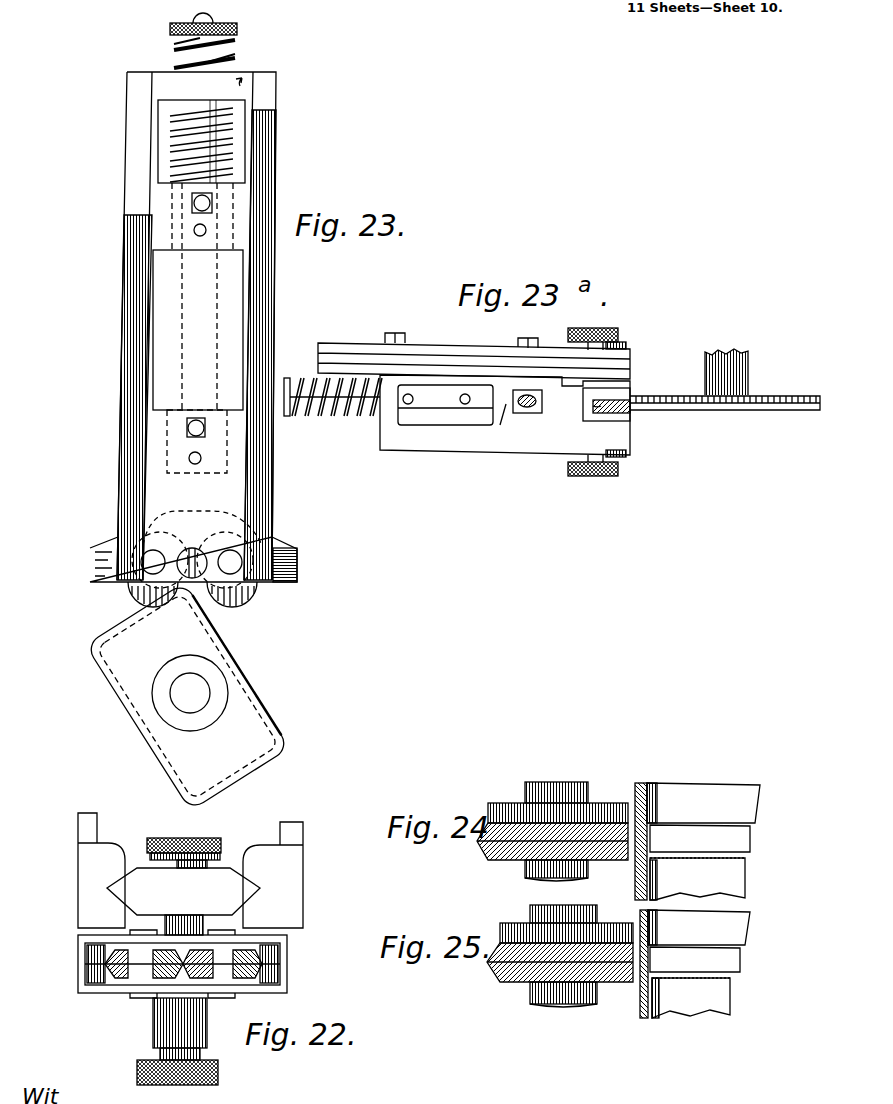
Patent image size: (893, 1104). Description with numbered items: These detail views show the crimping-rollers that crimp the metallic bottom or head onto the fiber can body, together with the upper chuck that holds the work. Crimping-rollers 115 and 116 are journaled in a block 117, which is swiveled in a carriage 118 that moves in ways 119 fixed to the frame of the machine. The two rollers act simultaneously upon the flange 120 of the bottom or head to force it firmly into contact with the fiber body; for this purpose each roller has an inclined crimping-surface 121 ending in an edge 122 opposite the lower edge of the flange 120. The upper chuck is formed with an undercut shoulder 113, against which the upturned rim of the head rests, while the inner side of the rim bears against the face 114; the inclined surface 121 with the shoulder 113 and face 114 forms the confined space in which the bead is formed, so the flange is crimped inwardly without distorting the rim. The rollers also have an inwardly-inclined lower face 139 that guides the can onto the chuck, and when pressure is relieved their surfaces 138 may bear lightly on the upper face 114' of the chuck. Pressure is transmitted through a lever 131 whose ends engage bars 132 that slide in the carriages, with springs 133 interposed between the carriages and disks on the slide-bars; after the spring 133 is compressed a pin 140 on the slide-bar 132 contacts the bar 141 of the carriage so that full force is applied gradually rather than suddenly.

In FIG. 24, the undercut shoulder 113 is at (703, 803).
In FIG. 25, the undercut shoulder 113 is at (645, 955).
In FIG. 24, the face 114 is at (700, 862).
In FIG. 25, the face 114 is at (695, 982).
In FIG. 23A, the upper face 114' is at (725, 379).
In FIG. 24, the upper face 114' is at (631, 774).
In FIG. 25, the upper face 114' is at (776, 925).
In FIG. 23, the crimping-roller 115 is at (246, 600).
In FIG. 22, the crimping-roller 115 is at (227, 963).
In FIG. 23, the crimping-roller 116 is at (128, 590).
In FIG. 23A, the crimping-roller 116 is at (632, 411).
In FIG. 22, the crimping-roller 116 is at (122, 960).
In FIG. 23, the block 117 is at (286, 558).
In FIG. 23, the carriage 118 is at (228, 487).
In FIG. 23A, the carriage 118 is at (362, 353).
In FIG. 22, the carriage 118 is at (183, 886).
In FIG. 22, the ways 119 is at (82, 882).
In FIG. 24, the flange 120 is at (637, 855).
In FIG. 25, the flange 120 is at (640, 987).
In FIG. 23A, the inclined crimping-surface 121 is at (593, 417).
In FIG. 22, the inclined crimping-surface 121 is at (120, 972).
In FIG. 24, the inclined crimping-surface 121 is at (489, 841).
In FIG. 25, the inclined crimping-surface 121 is at (492, 965).
In FIG. 24, the edge 122 is at (515, 853).
In FIG. 25, the edge 122 is at (530, 962).
In FIG. 23A, the lever 131 is at (550, 409).
In FIG. 23, the bar 132 is at (148, 324).
In FIG. 23A, the bar 132 is at (441, 400).
In FIG. 23, the spring 133 is at (102, 167).
In FIG. 23A, the spring 133 is at (347, 412).
In FIG. 24, the surface 138 is at (603, 804).
In FIG. 25, the surface 138 is at (572, 925).
In FIG. 24, the inwardly-inclined lower face 139 is at (541, 850).
In FIG. 25, the inwardly-inclined lower face 139 is at (566, 1003).
In FIG. 23A, the pin 140 is at (469, 405).
In FIG. 23A, the bar 141 is at (503, 407).